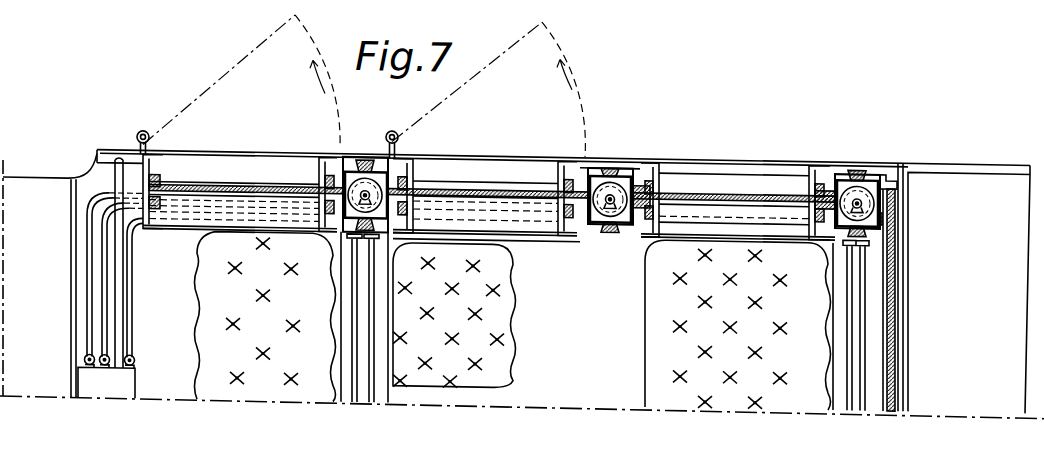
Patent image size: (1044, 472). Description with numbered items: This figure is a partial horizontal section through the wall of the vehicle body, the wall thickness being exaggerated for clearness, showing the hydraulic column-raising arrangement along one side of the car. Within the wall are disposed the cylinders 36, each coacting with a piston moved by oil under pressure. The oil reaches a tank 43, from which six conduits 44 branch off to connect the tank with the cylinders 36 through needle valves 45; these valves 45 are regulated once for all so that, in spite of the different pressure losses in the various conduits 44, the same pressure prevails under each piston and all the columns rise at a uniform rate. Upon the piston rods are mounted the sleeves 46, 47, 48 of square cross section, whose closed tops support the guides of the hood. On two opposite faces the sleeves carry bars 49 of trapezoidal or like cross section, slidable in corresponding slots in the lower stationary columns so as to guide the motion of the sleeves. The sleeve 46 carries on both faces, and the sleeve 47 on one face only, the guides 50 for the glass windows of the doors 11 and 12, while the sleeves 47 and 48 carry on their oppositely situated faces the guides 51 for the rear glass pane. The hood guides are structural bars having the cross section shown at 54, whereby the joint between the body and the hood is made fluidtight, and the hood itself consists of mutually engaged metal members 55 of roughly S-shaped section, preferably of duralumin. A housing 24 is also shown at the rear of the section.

The door 11 is at (513, 166).
The door 12 is at (240, 163).
The rear housing 24 is at (982, 168).
The cylinder 36 is at (385, 160).
The tank 43 is at (128, 381).
The conduits 44 is at (72, 301).
The needle valves 45 is at (125, 356).
The sleeve 46 is at (351, 154).
The sleeve 47 is at (592, 158).
The sleeve 48 is at (843, 161).
The bars 49 is at (860, 165).
The guides 50 is at (312, 167).
The guides 51 is at (650, 171).
The hood guide cross section 54 is at (885, 167).
The metal members 55 is at (895, 285).